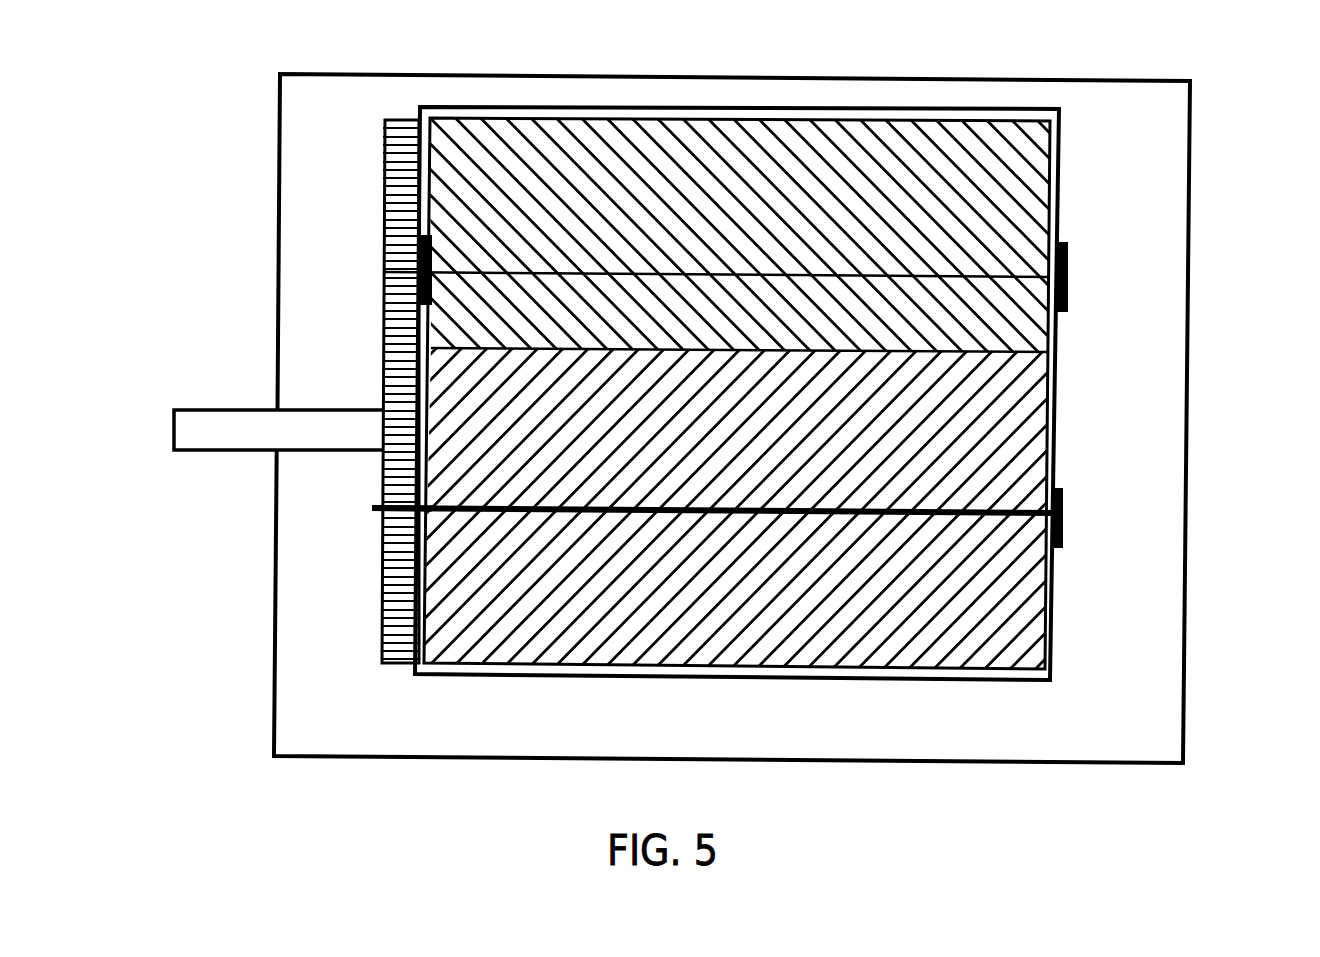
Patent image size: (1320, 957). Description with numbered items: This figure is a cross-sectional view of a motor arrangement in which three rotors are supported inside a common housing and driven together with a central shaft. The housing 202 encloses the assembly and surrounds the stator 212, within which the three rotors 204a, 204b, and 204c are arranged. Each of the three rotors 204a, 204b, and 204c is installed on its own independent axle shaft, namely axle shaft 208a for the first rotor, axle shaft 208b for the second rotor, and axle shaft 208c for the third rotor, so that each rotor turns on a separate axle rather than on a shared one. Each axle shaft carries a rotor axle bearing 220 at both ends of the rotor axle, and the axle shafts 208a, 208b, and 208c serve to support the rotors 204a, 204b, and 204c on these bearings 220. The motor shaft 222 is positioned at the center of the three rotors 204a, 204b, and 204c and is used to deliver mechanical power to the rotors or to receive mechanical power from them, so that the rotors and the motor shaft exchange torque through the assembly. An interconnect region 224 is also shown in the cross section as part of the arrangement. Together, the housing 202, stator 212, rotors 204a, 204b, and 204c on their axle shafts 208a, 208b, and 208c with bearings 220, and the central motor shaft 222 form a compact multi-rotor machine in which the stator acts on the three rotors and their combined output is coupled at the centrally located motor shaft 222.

The housing 202 is at (1013, 78).
The rotor 204a is at (1060, 173).
The rotor 204b is at (1053, 460).
The rotor 204c is at (1053, 460).
The axle shaft 208a is at (385, 272).
The axle shaft 208b is at (367, 507).
The axle shaft 208c is at (367, 508).
The stator 212 is at (1020, 230).
The rotor axle bearing 220 is at (427, 242).
The motor shaft 222 is at (190, 410).
The interconnect region 224 is at (383, 580).